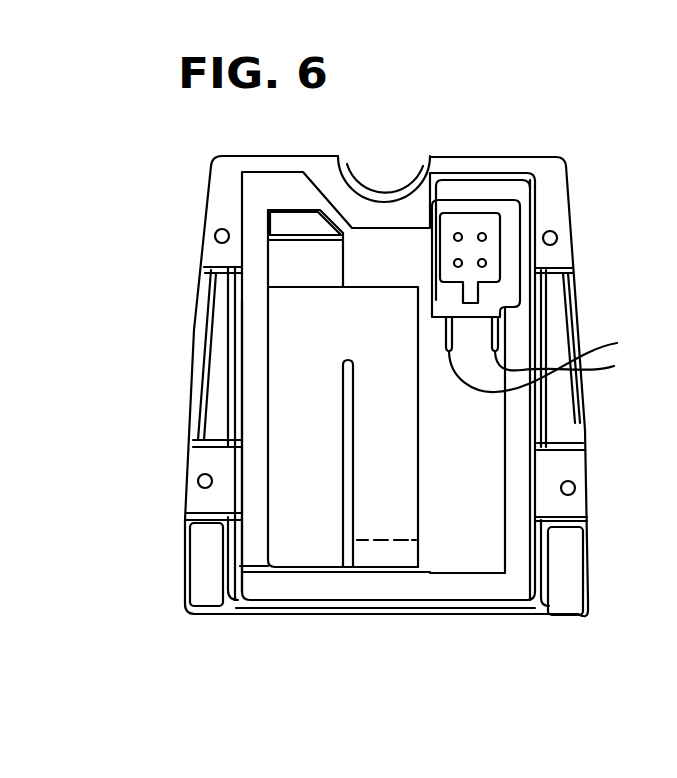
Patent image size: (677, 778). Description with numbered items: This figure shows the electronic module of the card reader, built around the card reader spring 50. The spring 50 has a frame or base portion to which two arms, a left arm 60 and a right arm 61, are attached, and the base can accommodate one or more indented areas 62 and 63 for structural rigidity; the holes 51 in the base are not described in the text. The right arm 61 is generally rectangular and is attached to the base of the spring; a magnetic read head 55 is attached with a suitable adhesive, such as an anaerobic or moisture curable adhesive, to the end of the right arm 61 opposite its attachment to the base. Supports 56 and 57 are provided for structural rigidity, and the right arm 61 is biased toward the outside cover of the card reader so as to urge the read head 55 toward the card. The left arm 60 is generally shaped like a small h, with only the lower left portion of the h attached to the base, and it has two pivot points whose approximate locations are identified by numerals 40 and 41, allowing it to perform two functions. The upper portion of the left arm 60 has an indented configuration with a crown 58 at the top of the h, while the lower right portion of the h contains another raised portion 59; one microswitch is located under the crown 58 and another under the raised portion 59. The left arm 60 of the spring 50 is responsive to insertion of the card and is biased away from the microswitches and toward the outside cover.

The pivot point 40 is at (313, 568).
The pivot point 41 is at (372, 315).
The card reader spring 50 is at (478, 158).
The mounting holes 51 is at (214, 237).
The magnetic read head 55 is at (493, 266).
The support 56 is at (550, 354).
The support 57 is at (572, 351).
The crown 58 is at (290, 262).
The raised portion 59 is at (395, 555).
The left arm 60 is at (310, 548).
The right arm 61 is at (470, 533).
The indented area 62 is at (213, 355).
The indented area 63 is at (558, 412).